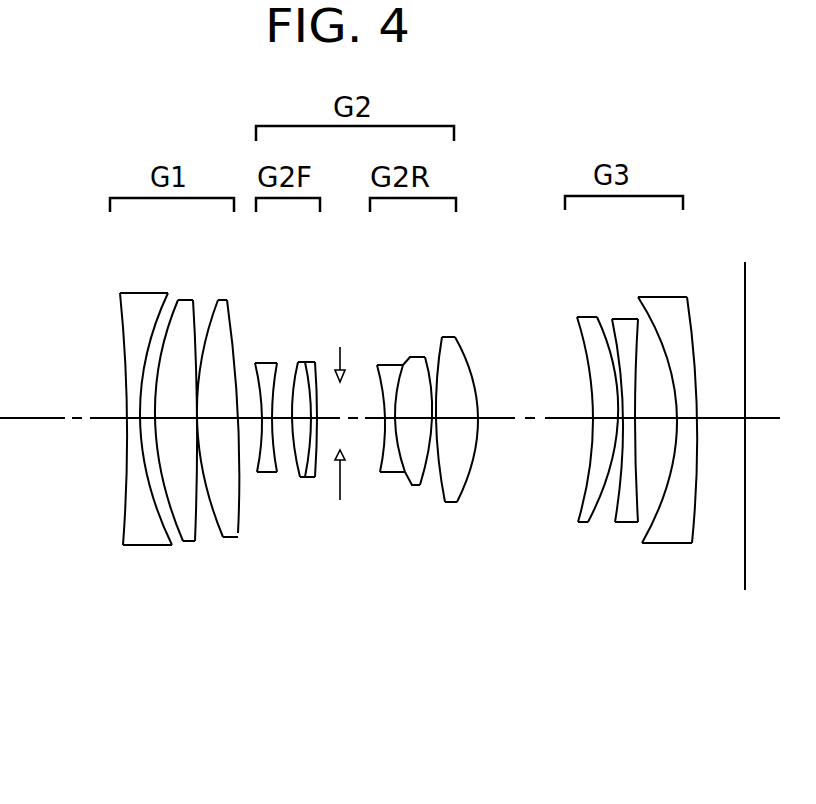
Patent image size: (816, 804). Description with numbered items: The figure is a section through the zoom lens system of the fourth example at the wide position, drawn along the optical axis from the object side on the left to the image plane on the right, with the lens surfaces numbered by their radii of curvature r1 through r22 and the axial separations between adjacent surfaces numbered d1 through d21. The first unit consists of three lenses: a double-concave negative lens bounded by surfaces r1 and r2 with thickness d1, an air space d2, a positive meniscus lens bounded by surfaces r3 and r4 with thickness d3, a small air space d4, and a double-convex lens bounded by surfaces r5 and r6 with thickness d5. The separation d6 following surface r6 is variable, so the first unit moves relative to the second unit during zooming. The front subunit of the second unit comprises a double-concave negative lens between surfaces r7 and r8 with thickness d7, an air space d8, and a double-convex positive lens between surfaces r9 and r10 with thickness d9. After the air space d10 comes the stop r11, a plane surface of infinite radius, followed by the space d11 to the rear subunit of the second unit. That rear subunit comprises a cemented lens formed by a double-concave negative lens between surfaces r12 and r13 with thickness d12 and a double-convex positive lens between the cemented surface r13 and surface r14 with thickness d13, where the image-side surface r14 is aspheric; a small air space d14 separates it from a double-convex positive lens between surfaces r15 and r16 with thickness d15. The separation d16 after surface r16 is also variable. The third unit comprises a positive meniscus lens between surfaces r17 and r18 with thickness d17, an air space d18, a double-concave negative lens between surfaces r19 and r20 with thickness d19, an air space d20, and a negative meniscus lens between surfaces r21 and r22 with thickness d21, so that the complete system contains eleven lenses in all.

The radius of curvature of first lens surface r1 is at (120, 310).
The radius of curvature of second lens surface r2 is at (157, 328).
The radius of curvature of third lens surface r3 is at (178, 300).
The radius of curvature of fourth lens surface r4 is at (197, 308).
The radius of curvature of fifth lens surface r5 is at (233, 317).
The radius of curvature of sixth lens surface r6 is at (255, 372).
The radius of curvature of seventh lens surface r7 is at (252, 362).
The radius of curvature of eighth lens surface r8 is at (298, 366).
The radius of curvature of ninth lens surface r9 is at (312, 362).
The radius of curvature of tenth lens surface r10 is at (318, 365).
The stop r11 is at (340, 395).
The radius of curvature of twelfth lens surface r12 is at (378, 378).
The radius of curvature of thirteenth lens surface r13 is at (400, 368).
The radius of curvature of fourteenth lens surface r14 is at (425, 356).
The radius of curvature of fifteenth lens surface r15 is at (442, 345).
The radius of curvature of sixteenth lens surface r16 is at (467, 358).
The radius of curvature of seventeenth lens surface r17 is at (577, 335).
The radius of curvature of eighteenth lens surface r18 is at (597, 318).
The radius of curvature of nineteenth lens surface r19 is at (612, 320).
The radius of curvature of twentieth lens surface r20 is at (630, 335).
The radius of curvature of twenty-first lens surface r21 is at (656, 330).
The radius of curvature of twenty-second lens surface r22 is at (688, 325).
The separation between first and second lens surfaces d1 is at (127, 437).
The separation between second and third lens surfaces d2 is at (143, 470).
The separation between third and fourth lens surfaces d3 is at (181, 420).
The separation between fourth and fifth lens surfaces d4 is at (215, 422).
The separation between fifth and sixth lens surfaces d5 is at (233, 527).
The separation between sixth and seventh lens surfaces d6 is at (248, 424).
The separation between seventh and eighth lens surfaces d7 is at (276, 424).
The separation between eighth and ninth lens surfaces d8 is at (290, 424).
The separation between ninth and tenth lens surfaces d9 is at (303, 424).
The separation between tenth and eleventh lens surfaces d10 is at (327, 424).
The separation between eleventh and twelfth lens surfaces d11 is at (363, 444).
The separation between twelfth and thirteenth lens surfaces d12 is at (385, 424).
The separation between thirteenth and fourteenth lens surfaces d13 is at (415, 424).
The separation between fourteenth and fifteenth lens surfaces d14 is at (438, 435).
The separation between fifteenth and sixteenth lens surfaces d15 is at (460, 419).
The separation between sixteenth and seventeenth lens surfaces d16 is at (530, 442).
The separation between seventeenth and eighteenth lens surfaces d17 is at (590, 460).
The separation between eighteenth and nineteenth lens surfaces d18 is at (616, 455).
The separation between nineteenth and twentieth lens surfaces d19 is at (627, 420).
The separation between twentieth and twenty-first lens surfaces d20 is at (658, 444).
The separation between twenty-first and twenty-second lens surfaces d21 is at (692, 540).